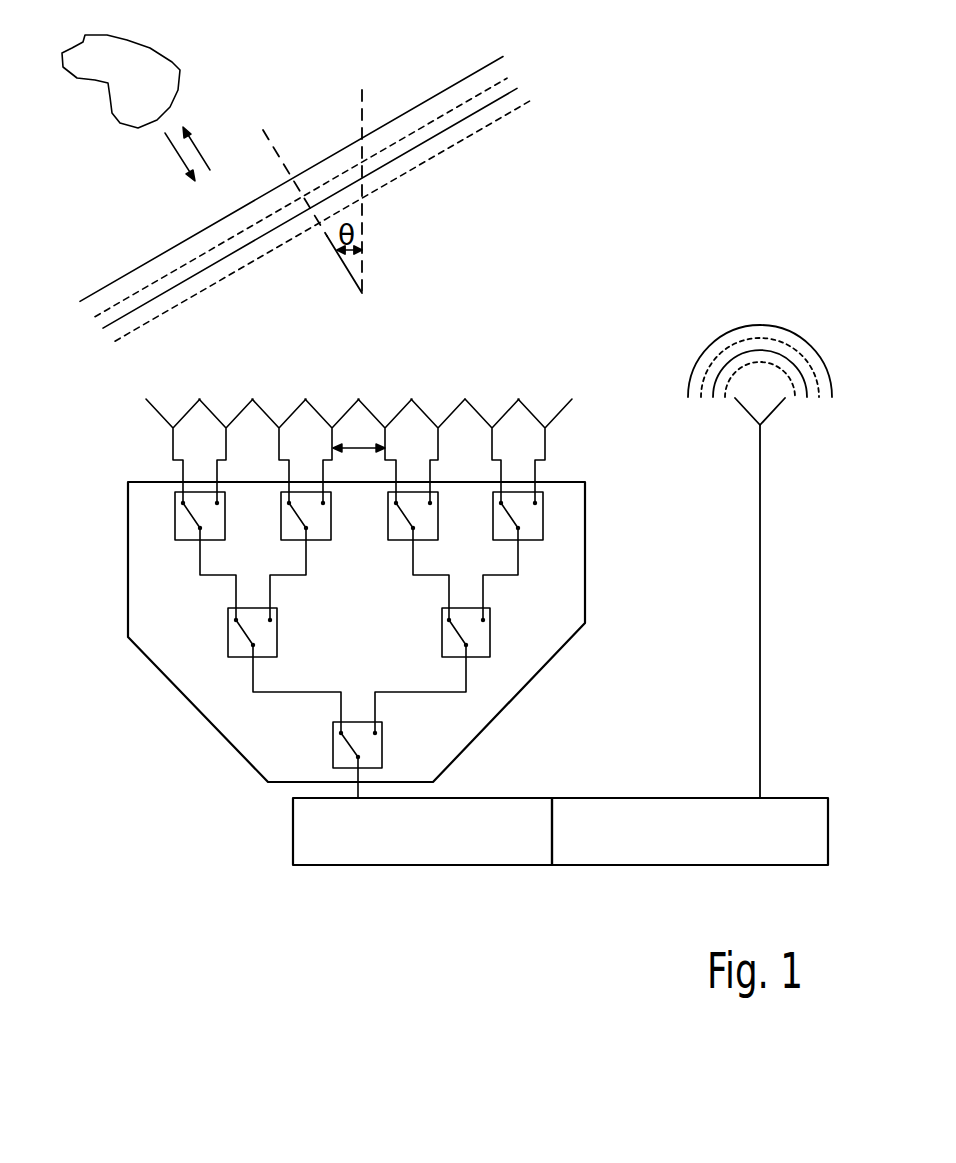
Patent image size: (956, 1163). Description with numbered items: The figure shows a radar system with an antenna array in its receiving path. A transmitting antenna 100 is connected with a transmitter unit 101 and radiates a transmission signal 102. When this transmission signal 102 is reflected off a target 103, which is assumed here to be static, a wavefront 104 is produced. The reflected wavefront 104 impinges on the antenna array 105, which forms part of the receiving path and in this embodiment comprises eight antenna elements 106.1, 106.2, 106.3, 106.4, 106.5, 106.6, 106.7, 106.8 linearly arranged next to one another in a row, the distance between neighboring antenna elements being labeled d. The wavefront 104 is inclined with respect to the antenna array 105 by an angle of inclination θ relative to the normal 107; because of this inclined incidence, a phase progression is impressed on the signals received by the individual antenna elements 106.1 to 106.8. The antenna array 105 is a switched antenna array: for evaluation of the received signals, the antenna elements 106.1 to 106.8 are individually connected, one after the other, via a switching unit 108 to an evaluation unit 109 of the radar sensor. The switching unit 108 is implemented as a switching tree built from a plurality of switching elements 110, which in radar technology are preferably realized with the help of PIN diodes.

The transmitting antenna 100 is at (760, 630).
The transmitter unit 101 is at (700, 849).
The transmission signal 102 is at (760, 327).
The target 103 is at (152, 62).
The wavefront 104 is at (503, 46).
The antenna array 105 is at (586, 427).
The antenna element 106.1 is at (187, 412).
The antenna element 106.2 is at (243, 410).
The antenna element 106.3 is at (297, 410).
The antenna element 106.4 is at (350, 410).
The antenna element 106.5 is at (402, 410).
The antenna element 106.6 is at (455, 410).
The antenna element 106.7 is at (509, 410).
The antenna element 106.8 is at (562, 410).
The normal 107 is at (363, 96).
The switching unit 108 is at (585, 595).
The evaluation unit 109 is at (460, 849).
The switching element 110 is at (212, 540).